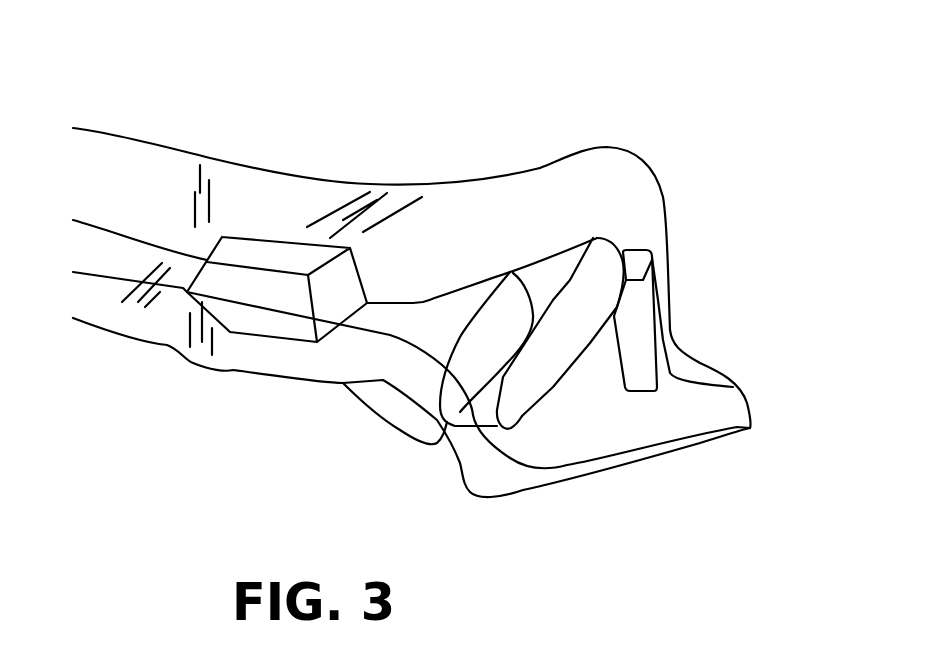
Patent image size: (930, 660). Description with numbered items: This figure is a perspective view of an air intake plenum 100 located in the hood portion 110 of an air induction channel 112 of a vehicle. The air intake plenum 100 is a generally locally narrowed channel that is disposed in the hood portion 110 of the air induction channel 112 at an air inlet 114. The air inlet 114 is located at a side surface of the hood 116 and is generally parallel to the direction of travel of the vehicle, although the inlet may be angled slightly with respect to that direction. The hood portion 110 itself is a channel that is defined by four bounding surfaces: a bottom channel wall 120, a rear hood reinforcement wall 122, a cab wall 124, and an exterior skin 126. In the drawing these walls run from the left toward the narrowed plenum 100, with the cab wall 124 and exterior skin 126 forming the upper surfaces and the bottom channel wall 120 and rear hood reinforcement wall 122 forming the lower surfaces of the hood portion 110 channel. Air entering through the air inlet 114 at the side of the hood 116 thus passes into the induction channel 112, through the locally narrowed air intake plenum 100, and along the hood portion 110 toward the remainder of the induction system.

The air intake plenum 100 is at (555, 270).
The hood portion 110 is at (243, 187).
The air induction channel 112 is at (605, 123).
The air inlet 114 is at (582, 355).
The hood 116 is at (643, 237).
The bottom channel wall 120 is at (142, 272).
The rear hood reinforcement wall 122 is at (180, 330).
The cab wall 124 is at (187, 180).
The exterior skin 126 is at (315, 193).